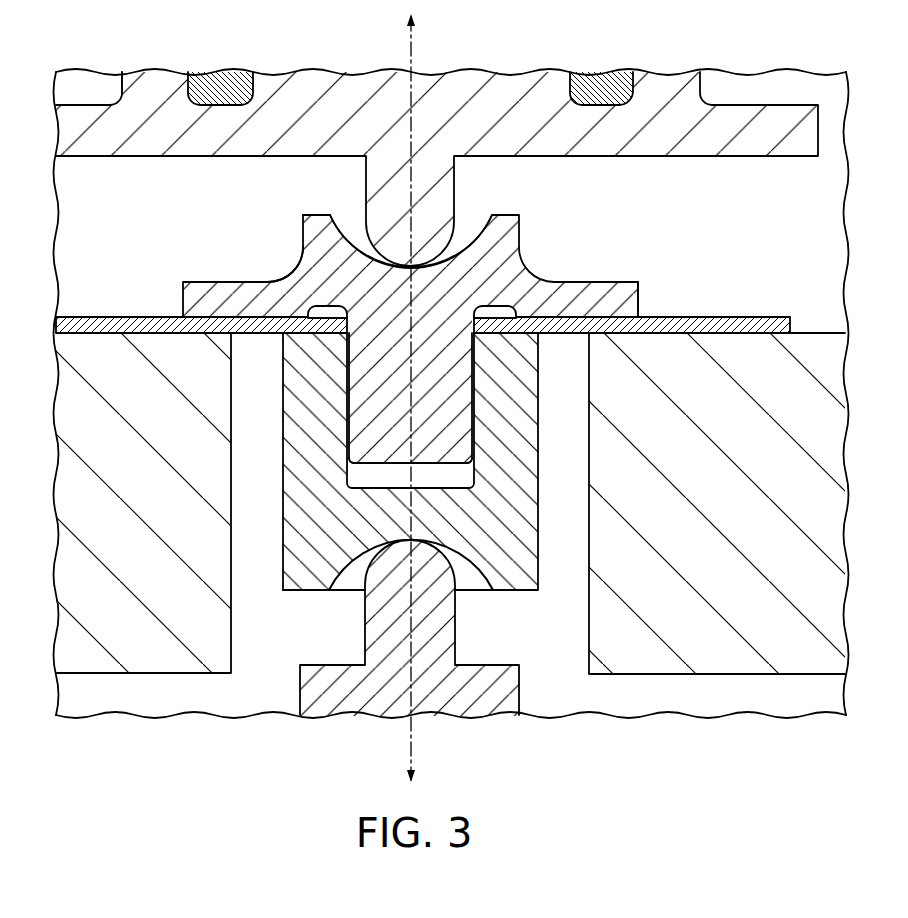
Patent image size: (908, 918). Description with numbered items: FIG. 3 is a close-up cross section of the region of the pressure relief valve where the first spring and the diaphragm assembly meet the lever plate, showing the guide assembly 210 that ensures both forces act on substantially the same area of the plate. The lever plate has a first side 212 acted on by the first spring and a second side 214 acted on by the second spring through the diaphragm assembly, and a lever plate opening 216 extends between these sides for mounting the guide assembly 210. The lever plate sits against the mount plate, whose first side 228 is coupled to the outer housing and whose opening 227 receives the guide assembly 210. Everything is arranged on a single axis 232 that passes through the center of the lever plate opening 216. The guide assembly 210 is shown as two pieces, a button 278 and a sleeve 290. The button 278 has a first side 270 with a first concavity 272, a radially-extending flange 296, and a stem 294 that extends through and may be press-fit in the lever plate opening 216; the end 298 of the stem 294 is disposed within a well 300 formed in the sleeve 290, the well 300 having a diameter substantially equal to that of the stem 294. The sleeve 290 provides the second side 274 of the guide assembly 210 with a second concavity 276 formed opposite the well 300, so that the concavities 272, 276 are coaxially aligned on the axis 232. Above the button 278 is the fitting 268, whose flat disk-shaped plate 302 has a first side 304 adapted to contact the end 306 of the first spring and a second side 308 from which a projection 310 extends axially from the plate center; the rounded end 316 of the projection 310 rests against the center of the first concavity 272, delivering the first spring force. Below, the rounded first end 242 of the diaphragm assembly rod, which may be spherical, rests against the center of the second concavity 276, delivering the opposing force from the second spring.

The guide assembly 210 is at (665, 224).
The first side of lever plate 212 is at (137, 317).
The second side of lever plate 214 is at (60, 352).
The lever plate opening 216 is at (507, 306).
The opening of mount plate 227 is at (580, 440).
The first side of mount plate 228 is at (757, 318).
The axis 232 is at (408, 728).
The rounded first end of rod 242 is at (455, 585).
The fitting 268 is at (434, 118).
The first side of guide assembly 270 is at (303, 213).
The first concavity 272 is at (348, 223).
The second side of guide assembly 274 is at (296, 592).
The second concavity 276 is at (347, 592).
The button 278 is at (303, 240).
The sleeve 290 is at (303, 447).
The stem 294 is at (355, 375).
The radially-extending flange 296 is at (622, 290).
The end of stem 298 is at (370, 467).
The well 300 is at (452, 478).
The plate 302 is at (530, 118).
The first side of plate 304 is at (77, 100).
The end of first spring 306 is at (221, 78).
The second side of plate 308 is at (606, 160).
The projection 310 is at (392, 177).
The rounded end of projection 316 is at (462, 240).